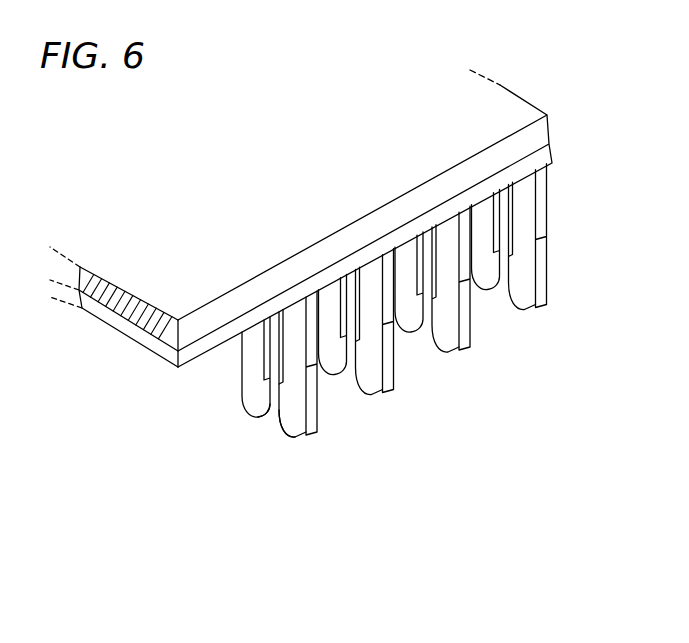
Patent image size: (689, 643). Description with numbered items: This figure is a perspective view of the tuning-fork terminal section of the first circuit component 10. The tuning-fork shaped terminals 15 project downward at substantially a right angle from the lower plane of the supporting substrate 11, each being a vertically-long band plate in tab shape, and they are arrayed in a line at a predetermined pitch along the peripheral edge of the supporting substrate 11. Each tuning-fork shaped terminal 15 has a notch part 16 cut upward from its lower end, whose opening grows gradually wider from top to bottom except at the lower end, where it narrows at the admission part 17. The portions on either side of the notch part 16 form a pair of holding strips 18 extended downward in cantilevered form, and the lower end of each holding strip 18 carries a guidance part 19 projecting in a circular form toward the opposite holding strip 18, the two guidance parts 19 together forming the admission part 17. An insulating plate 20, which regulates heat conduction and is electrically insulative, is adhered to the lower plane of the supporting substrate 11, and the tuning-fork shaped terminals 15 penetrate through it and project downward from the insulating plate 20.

The first circuit component 10 is at (503, 62).
The supporting substrate 11 is at (190, 323).
The tuning-fork shaped terminal 15 is at (366, 351).
The notch part 16 is at (282, 342).
The admission part 17 is at (280, 397).
The holding strip 18 is at (250, 352).
The guidance part 19 is at (268, 410).
The insulating plate 20 is at (141, 352).